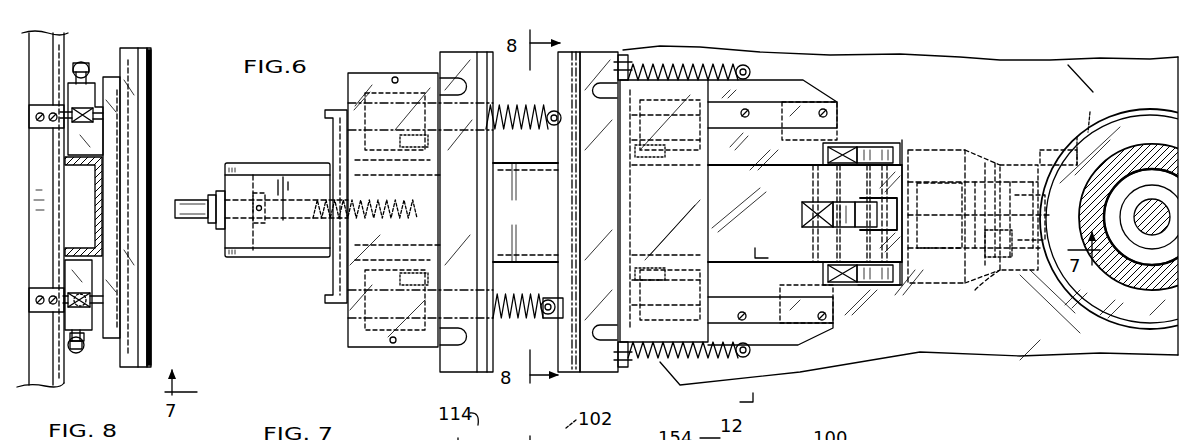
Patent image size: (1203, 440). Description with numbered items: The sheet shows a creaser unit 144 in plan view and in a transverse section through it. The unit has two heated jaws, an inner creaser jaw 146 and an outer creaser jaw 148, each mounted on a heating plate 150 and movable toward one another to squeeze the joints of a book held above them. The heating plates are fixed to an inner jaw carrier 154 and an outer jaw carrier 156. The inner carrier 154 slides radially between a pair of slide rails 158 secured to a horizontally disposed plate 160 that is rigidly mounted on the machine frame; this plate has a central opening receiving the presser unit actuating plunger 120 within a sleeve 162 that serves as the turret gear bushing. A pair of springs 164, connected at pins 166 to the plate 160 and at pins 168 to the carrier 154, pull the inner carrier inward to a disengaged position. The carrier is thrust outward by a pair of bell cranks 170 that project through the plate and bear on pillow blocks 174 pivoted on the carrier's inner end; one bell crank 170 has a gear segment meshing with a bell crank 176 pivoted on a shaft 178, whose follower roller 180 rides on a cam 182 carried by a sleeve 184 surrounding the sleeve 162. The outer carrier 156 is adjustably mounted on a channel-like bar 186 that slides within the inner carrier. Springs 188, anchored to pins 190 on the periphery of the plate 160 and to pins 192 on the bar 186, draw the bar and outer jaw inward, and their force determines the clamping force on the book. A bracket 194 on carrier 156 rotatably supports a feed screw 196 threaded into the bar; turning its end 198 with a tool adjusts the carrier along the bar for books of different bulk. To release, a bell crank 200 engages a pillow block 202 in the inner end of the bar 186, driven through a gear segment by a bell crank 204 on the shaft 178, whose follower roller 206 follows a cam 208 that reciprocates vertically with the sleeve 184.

In FIG. 6, the presser unit actuating plunger 120 is at (1133, 237).
In FIG. 6, the creaser unit 144 is at (302, 329).
In FIG. 8, the creaser jaw 146 is at (152, 62).
In FIG. 6, the creaser jaw 146 is at (562, 371).
In FIG. 6, the creaser jaw 148 is at (443, 366).
In FIG. 8, the heating plate 150 is at (132, 50).
In FIG. 8, the inner jaw carrier 154 is at (112, 170).
In FIG. 6, the inner jaw carrier 154 is at (707, 196).
In FIG. 6, the outer jaw carrier 156 is at (373, 330).
In FIG. 8, the slide rail 158 is at (100, 137).
In FIG. 6, the slide rail 158 is at (800, 82).
In FIG. 8, the horizontally disposed plate 160 is at (33, 372).
In FIG. 6, the horizontally disposed plate 160 is at (1125, 356).
In FIG. 6, the sleeve 162 is at (1143, 147).
In FIG. 8, the spring 164 is at (85, 348).
In FIG. 6, the spring 164 is at (690, 63).
In FIG. 6, the pin 166 is at (749, 70).
In FIG. 8, the pin 168 is at (80, 62).
In FIG. 6, the pin 168 is at (623, 58).
In FIG. 6, the bell crank 170 is at (880, 152).
In FIG. 6, the pillow block 174 is at (858, 157).
In FIG. 6, the bell crank 176 is at (953, 218).
In FIG. 6, the shaft 178 is at (998, 165).
In FIG. 6, the follower roller 180 is at (968, 280).
In FIG. 6, the cam 182 is at (1045, 305).
In FIG. 6, the sleeve 184 is at (1096, 98).
In FIG. 8, the channel-like bar 186 is at (100, 200).
In FIG. 6, the channel-like bar 186 is at (550, 232).
In FIG. 8, the spring 188 is at (100, 284).
In FIG. 6, the spring 188 is at (514, 108).
In FIG. 8, the pin 190 is at (95, 112).
In FIG. 6, the pin 190 is at (556, 126).
In FIG. 6, the pin 192 is at (338, 109).
In FIG. 6, the bracket 194 is at (292, 165).
In FIG. 6, the feed screw 196 is at (295, 218).
In FIG. 6, the end of the feed screw 198 is at (176, 222).
In FIG. 6, the bell crank 200 is at (896, 165).
In FIG. 6, the pillow block 202 is at (805, 214).
In FIG. 6, the bell crank 204 is at (979, 216).
In FIG. 6, the follower roller 206 is at (1003, 180).
In FIG. 6, the cam 208 is at (1077, 152).